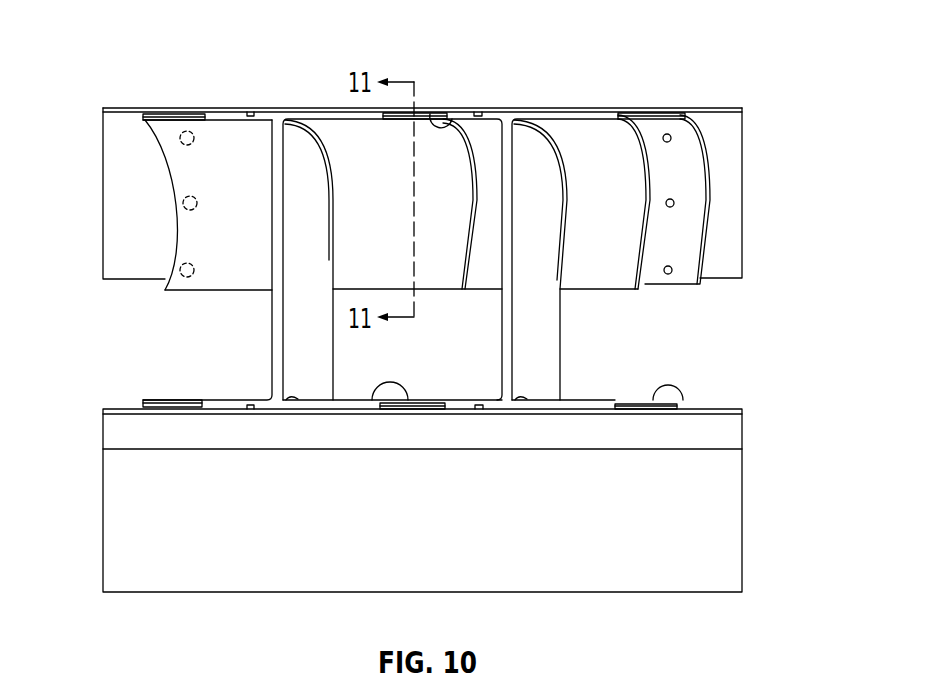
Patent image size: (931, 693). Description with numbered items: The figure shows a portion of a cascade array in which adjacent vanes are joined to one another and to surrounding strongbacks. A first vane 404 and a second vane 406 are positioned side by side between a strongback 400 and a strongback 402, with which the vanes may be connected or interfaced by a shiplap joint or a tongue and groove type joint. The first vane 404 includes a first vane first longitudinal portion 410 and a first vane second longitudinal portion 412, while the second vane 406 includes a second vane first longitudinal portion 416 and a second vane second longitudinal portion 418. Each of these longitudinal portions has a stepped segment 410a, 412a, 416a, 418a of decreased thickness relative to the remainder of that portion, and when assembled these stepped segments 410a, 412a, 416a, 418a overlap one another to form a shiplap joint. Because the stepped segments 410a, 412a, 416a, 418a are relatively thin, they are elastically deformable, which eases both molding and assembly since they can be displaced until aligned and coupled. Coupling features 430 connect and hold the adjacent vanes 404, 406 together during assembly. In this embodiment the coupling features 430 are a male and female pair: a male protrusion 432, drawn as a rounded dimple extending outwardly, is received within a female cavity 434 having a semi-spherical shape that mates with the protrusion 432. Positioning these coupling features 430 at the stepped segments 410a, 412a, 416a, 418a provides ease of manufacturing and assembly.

The strongback 400 is at (730, 510).
The strongback 402 is at (730, 132).
The first vane 404 is at (548, 347).
The second vane 406 is at (307, 358).
The first vane first longitudinal portion 410 is at (470, 397).
The stepped segment 410a is at (423, 409).
The first vane second longitudinal portion 412 is at (578, 126).
The stepped segment 412a is at (432, 118).
The second vane first longitudinal portion 416 is at (233, 398).
The stepped segment 416a is at (168, 400).
The second vane second longitudinal portion 418 is at (229, 132).
The stepped segment 418a is at (170, 120).
The coupling features 430 is at (739, 79).
The male protrusion 432 is at (672, 270).
The female cavity 434 is at (181, 138).